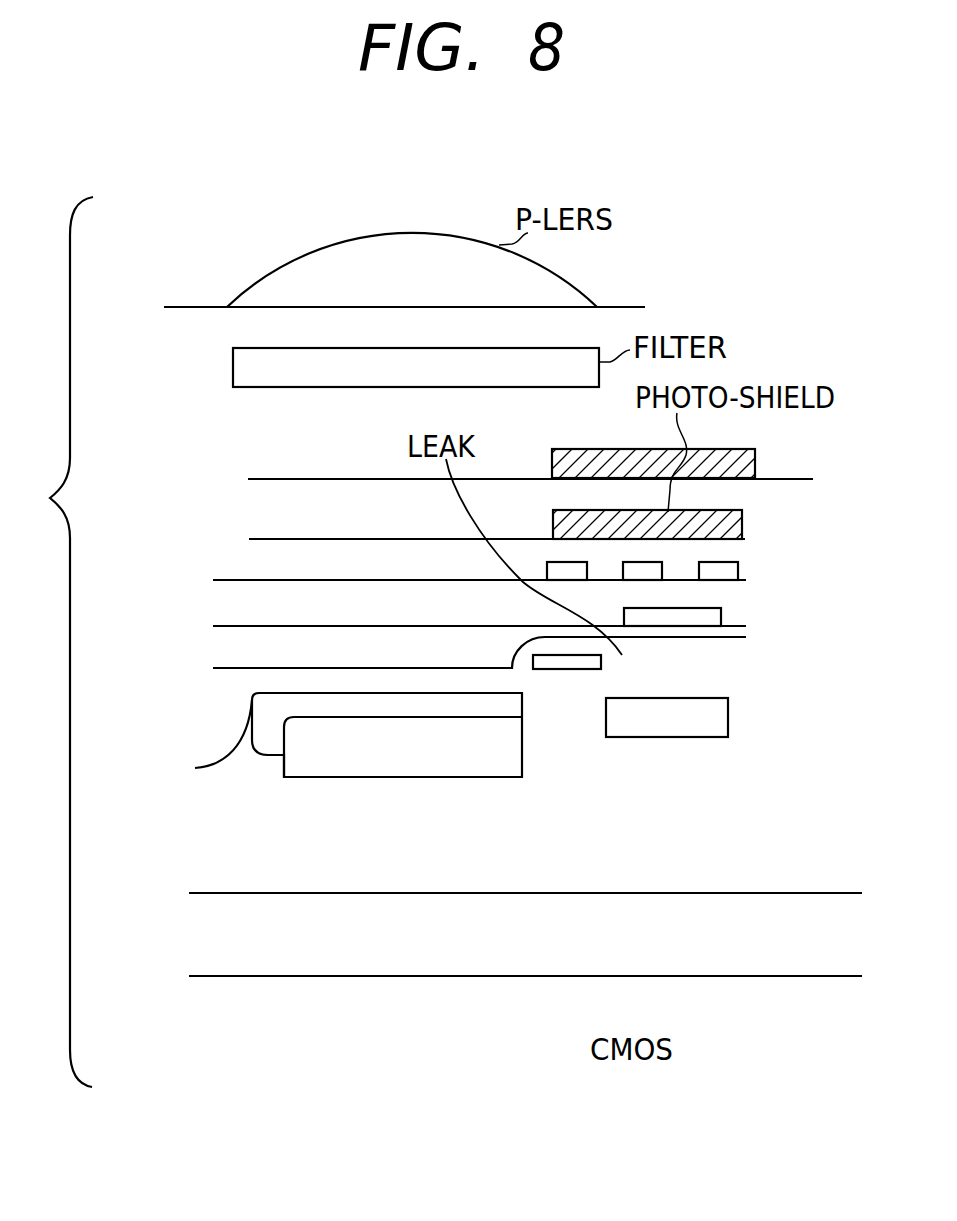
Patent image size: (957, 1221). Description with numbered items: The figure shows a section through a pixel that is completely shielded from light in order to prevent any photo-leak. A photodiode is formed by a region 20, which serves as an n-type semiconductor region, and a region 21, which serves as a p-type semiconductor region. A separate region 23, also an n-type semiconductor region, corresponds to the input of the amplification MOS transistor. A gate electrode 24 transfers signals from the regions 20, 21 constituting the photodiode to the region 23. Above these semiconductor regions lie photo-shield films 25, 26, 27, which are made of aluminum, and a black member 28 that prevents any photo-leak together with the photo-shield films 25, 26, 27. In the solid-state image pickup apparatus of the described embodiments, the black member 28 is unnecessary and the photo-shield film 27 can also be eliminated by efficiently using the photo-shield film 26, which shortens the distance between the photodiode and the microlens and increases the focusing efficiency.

The region 20 is at (338, 778).
The region 21 is at (797, 908).
The region 23 is at (645, 738).
The gate electrode 24 is at (569, 671).
The photo-shield film 25 is at (721, 614).
The photo-shield film 26 is at (738, 572).
The photo-shield film 27 is at (742, 518).
The black member 28 is at (755, 462).